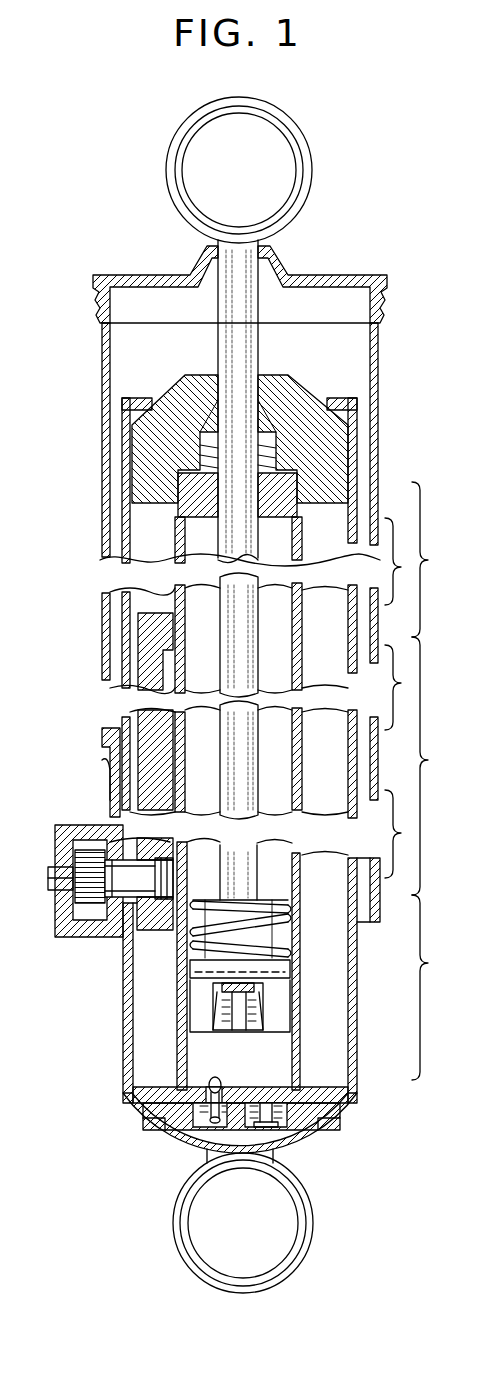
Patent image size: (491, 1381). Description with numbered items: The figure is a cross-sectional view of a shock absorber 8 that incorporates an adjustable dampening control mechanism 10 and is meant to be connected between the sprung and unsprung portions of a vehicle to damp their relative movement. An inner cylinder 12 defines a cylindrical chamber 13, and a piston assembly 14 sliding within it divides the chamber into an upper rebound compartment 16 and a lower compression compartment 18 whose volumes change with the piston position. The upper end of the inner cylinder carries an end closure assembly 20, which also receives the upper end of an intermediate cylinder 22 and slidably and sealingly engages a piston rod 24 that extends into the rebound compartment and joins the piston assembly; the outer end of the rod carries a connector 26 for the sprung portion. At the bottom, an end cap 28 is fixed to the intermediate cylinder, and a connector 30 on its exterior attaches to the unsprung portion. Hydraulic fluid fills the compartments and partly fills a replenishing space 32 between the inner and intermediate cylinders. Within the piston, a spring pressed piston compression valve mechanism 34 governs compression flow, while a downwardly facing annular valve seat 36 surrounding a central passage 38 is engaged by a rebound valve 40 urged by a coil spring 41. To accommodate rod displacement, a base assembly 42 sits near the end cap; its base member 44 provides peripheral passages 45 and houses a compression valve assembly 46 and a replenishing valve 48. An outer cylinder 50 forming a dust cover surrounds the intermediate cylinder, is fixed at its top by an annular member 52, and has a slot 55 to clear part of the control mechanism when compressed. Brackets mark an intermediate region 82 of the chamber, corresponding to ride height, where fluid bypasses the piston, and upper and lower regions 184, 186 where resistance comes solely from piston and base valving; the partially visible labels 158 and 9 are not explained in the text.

The shock absorber 8 is at (378, 248).
The connector 26 is at (306, 141).
The piston rod 24 is at (218, 352).
The annular member 52 is at (150, 276).
The outer cylinder 50 is at (103, 343).
The intermediate cylinder 22 is at (122, 500).
The end closure assembly 20 is at (178, 385).
The cylindrical chamber 13 is at (213, 598).
The inner cylinder 12 is at (145, 611).
The rebound compartment 16 is at (197, 718).
The slot 55 is at (118, 778).
The dampening control mechanism 10 is at (113, 940).
The compression compartment 18 is at (213, 1058).
The piston assembly 14 is at (183, 1030).
The replenishing space 32 is at (330, 1030).
The central passage 38 is at (253, 983).
The piston compression valve mechanism 34 is at (188, 968).
The annular valve seat 36 is at (272, 994).
The rebound valve 40 is at (213, 990).
The coil spring 41 is at (267, 1023).
The base assembly 42 is at (322, 1102).
The passages 45 is at (200, 1120).
The replenishing valve 48 is at (205, 1077).
The base member 44 is at (270, 1087).
The end cap 28 is at (302, 1150).
The compression valve assembly 46 is at (303, 1142).
The connector 30 is at (183, 1210).
The upper region 184 is at (437, 559).
The intermediate region 82 is at (432, 766).
The lower region 186 is at (451, 987).
The section 158 is at (486, 878).
The section 9 is at (484, 1001).